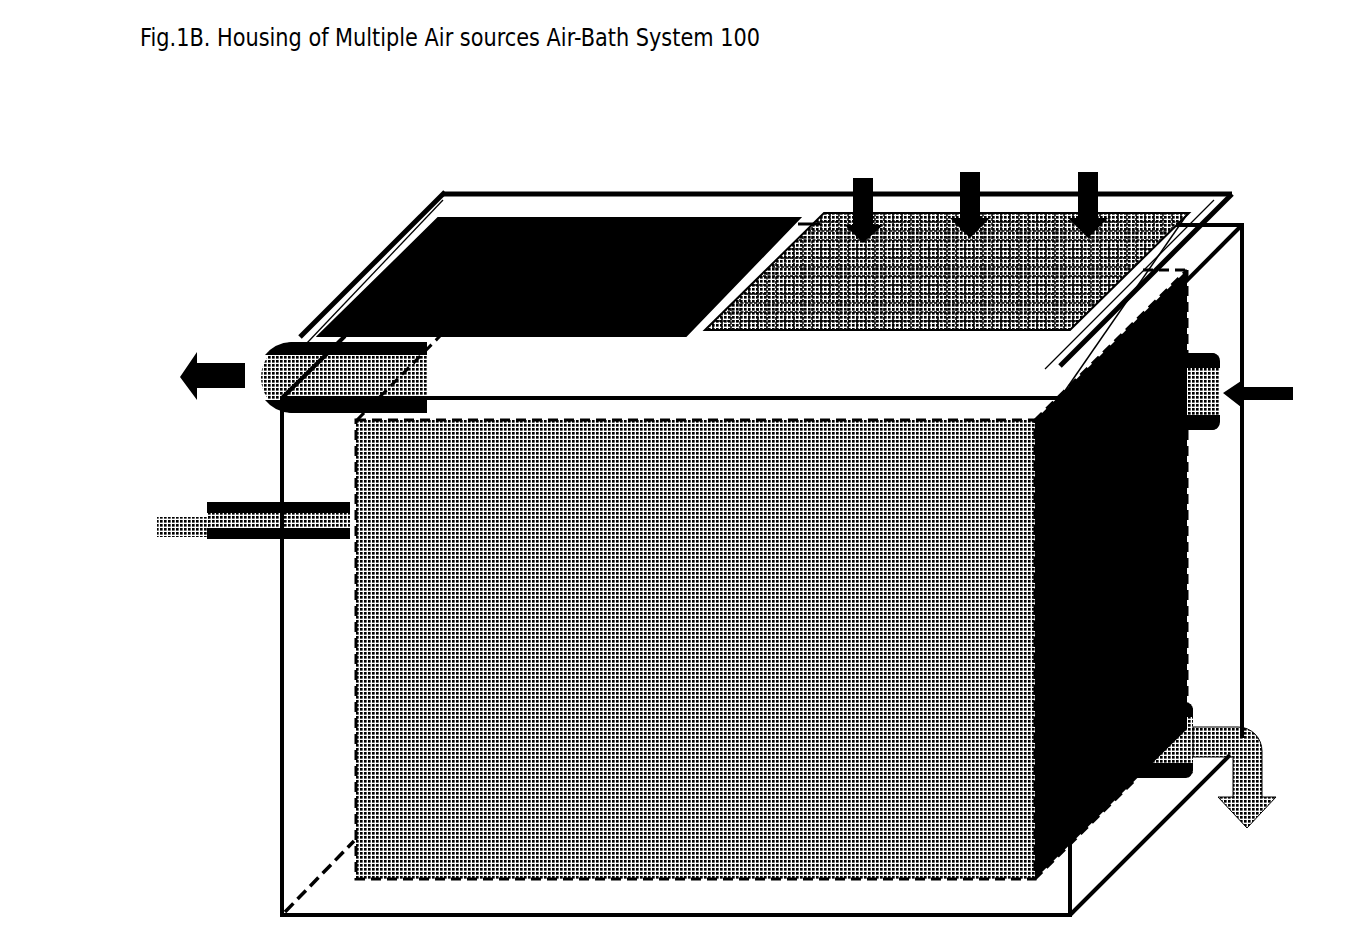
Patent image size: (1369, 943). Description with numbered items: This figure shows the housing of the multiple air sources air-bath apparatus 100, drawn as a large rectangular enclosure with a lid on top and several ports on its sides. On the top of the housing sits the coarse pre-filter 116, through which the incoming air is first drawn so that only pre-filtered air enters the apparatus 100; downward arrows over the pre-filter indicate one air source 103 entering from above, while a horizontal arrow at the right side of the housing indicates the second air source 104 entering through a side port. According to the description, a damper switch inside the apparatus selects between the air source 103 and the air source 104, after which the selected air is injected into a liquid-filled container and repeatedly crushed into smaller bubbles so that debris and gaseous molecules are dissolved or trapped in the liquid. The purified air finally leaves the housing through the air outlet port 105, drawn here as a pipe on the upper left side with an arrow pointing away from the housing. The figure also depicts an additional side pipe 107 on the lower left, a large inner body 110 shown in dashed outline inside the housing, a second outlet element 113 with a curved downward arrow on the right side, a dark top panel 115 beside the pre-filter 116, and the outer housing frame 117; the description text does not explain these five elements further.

The multiple air sources air-bath apparatus 100 is at (745, 509).
The air source 103 is at (976, 173).
The air source 104 is at (1238, 391).
The air outlet port 105 is at (292, 343).
The lower side air inlet pipe 107 is at (247, 542).
The inner chamber body 110 is at (412, 719).
The air outlet port with flow arrow 113 is at (1260, 744).
The top panel 115 is at (506, 238).
The coarse pre-filter 116 is at (1134, 236).
The housing frame 117 is at (1092, 859).